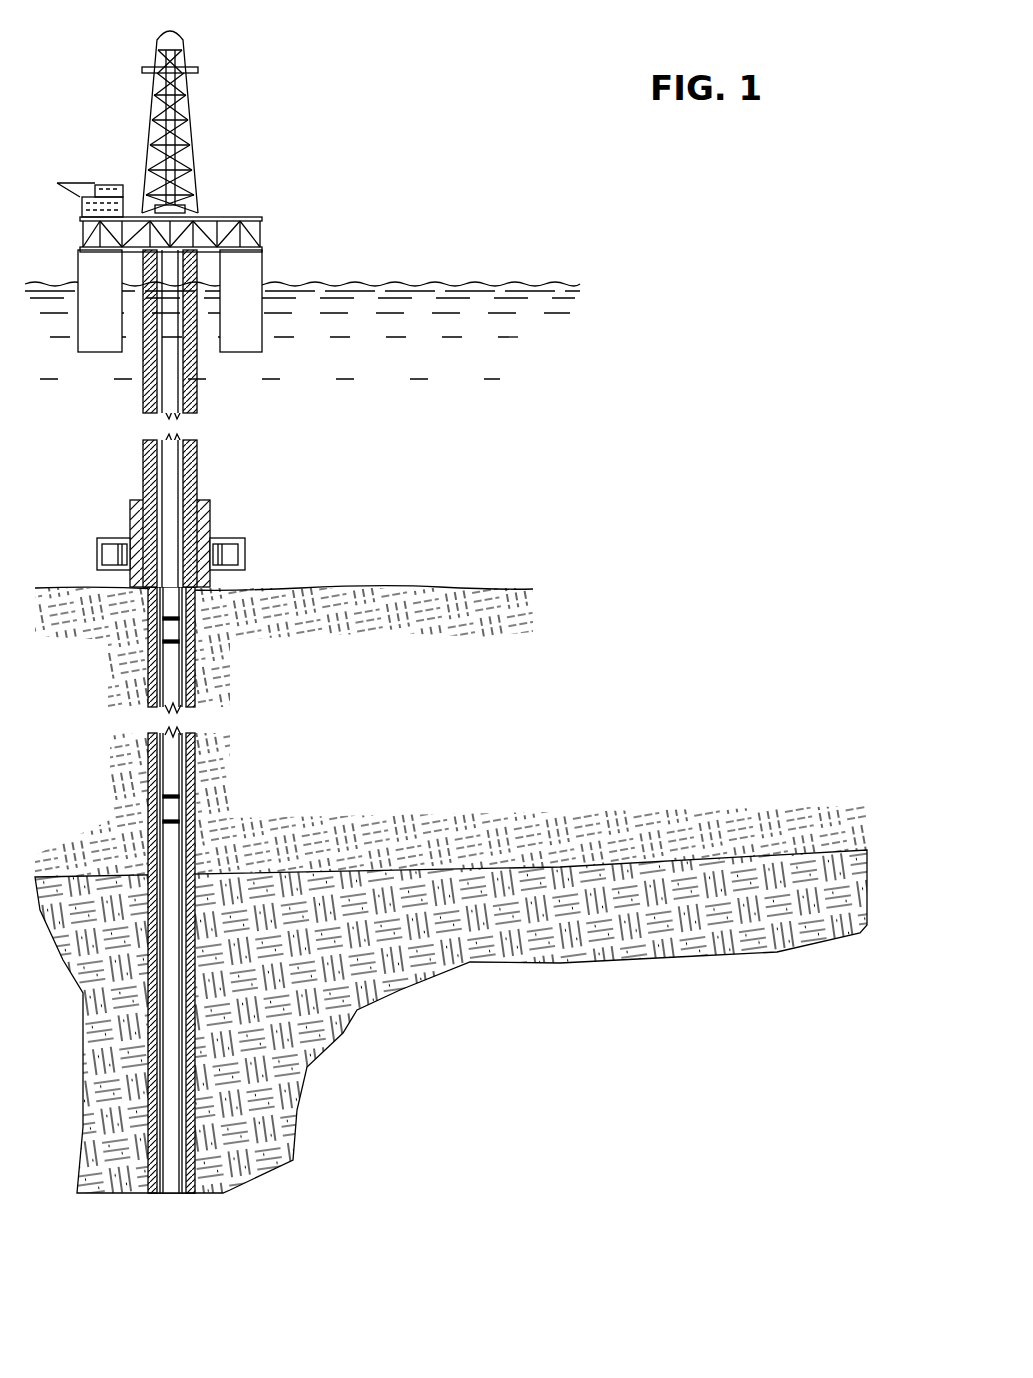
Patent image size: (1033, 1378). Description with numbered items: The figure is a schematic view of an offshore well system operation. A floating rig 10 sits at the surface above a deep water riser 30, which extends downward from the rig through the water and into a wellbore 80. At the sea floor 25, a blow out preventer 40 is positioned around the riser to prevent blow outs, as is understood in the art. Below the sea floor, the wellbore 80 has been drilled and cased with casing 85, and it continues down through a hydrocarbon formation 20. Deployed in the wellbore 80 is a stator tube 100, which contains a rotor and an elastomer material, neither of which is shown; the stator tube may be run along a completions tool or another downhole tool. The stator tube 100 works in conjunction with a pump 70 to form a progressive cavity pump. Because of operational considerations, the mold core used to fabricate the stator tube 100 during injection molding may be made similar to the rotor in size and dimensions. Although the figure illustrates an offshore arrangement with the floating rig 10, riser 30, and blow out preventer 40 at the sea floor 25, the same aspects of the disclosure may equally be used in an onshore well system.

The floating rig 10 is at (307, 91).
The hydrocarbon formation 20 is at (307, 952).
The sea floor 25 is at (432, 588).
The deep water riser 30 is at (143, 395).
The blow out preventer 40 is at (112, 513).
The pump 70 is at (196, 183).
The wellbore 80 is at (197, 757).
The casing 85 is at (148, 765).
The stator tube 100 is at (172, 675).